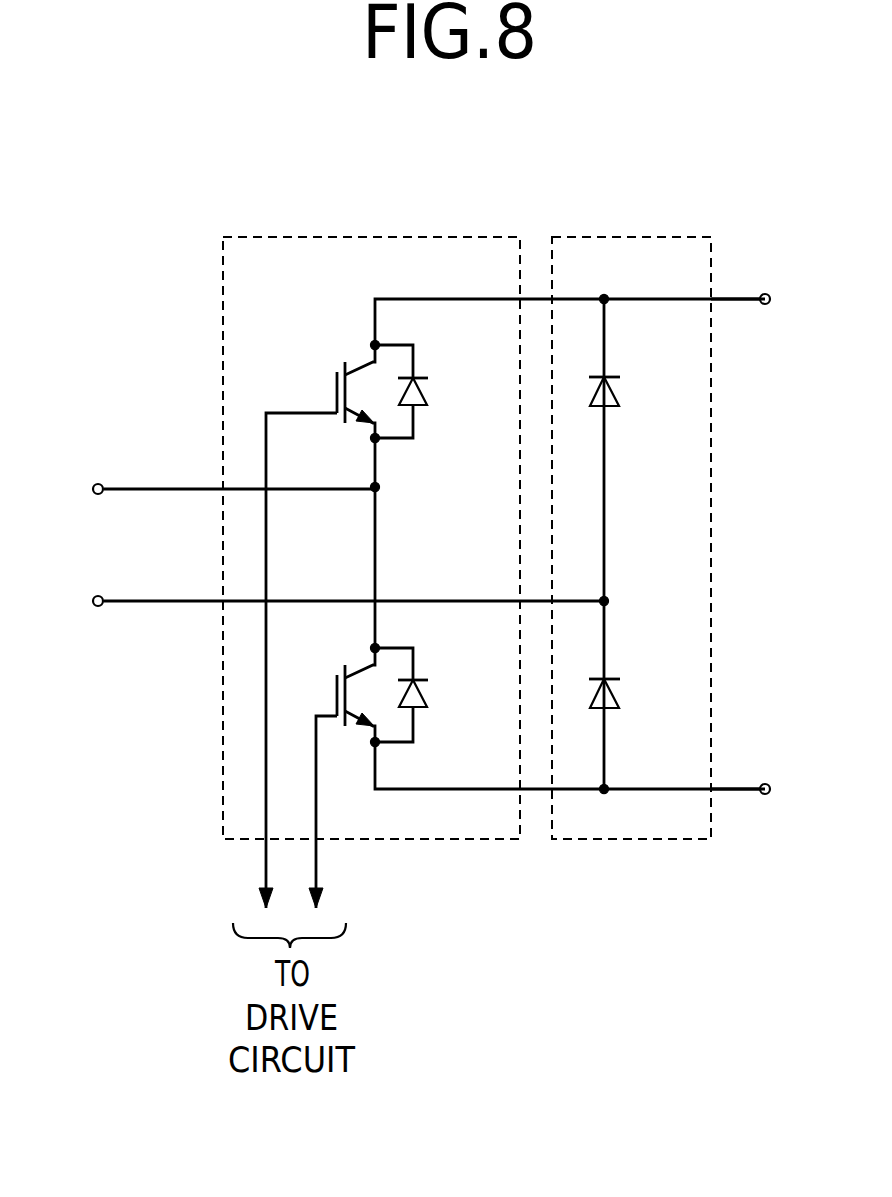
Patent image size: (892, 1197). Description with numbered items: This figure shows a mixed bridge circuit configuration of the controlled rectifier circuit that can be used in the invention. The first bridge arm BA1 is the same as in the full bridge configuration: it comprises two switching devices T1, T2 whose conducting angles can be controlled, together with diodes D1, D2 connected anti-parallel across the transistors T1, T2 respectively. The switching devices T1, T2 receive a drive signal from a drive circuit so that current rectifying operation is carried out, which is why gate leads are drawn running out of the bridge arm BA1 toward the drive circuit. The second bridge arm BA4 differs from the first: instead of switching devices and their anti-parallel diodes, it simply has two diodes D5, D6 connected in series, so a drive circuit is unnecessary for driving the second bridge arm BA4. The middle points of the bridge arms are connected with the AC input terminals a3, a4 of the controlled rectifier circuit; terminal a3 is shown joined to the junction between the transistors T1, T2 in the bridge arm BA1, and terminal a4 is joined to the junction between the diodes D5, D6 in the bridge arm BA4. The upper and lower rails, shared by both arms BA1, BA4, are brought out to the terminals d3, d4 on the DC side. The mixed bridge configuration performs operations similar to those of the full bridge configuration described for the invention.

The bridge arm BA1 is at (370, 237).
The second bridge arm BA4 is at (633, 237).
The switching device T1 is at (319, 611).
The switching device T2 is at (335, 762).
The diode D1 is at (428, 391).
The diode D2 is at (428, 695).
The diode D5 is at (637, 391).
The diode D6 is at (637, 693).
The AC input terminal a3 is at (206, 489).
The AC input terminal a4 is at (320, 601).
The DC terminal d3 is at (768, 298).
The DC terminal d4 is at (768, 788).